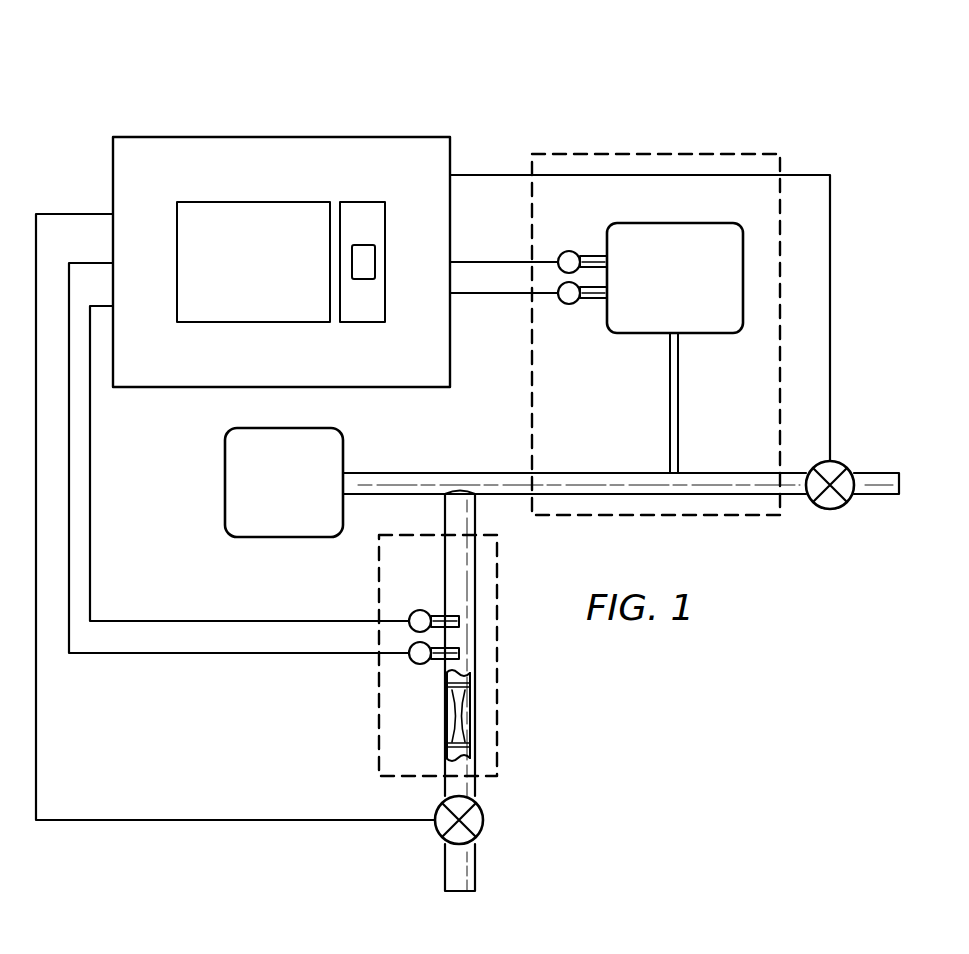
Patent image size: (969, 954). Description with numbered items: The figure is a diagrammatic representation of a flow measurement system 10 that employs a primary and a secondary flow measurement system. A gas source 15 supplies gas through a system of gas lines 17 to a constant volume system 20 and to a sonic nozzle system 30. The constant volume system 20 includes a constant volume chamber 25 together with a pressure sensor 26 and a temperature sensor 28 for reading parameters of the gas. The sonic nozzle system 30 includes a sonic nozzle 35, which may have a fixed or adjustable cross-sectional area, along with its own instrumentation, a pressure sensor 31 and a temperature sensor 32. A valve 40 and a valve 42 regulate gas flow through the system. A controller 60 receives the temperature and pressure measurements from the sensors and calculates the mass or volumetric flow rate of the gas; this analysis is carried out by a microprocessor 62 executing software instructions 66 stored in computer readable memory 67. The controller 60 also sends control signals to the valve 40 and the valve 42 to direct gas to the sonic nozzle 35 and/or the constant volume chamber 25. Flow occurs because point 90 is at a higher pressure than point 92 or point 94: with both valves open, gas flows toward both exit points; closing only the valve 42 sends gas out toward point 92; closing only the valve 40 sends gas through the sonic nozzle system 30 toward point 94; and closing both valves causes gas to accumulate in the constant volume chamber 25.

The flow measurement system 10 is at (345, 60).
The gas source 15 is at (225, 482).
The gas lines 17 is at (455, 464).
The constant volume system 20 is at (657, 151).
The constant volume chamber 25 is at (703, 333).
The pressure sensor 26 is at (573, 248).
The temperature sensor 28 is at (574, 307).
The sonic nozzle system 30 is at (502, 678).
The pressure sensor 31 is at (421, 668).
The temperature sensor 32 is at (421, 606).
The sonic nozzle 35 is at (471, 718).
The valve 40 is at (840, 507).
The valve 42 is at (481, 832).
The controller 60 is at (260, 135).
The microprocessor 62 is at (267, 277).
The software instructions 66 is at (364, 279).
The computer readable memory 67 is at (356, 196).
The point 90 is at (352, 476).
The point 92 is at (876, 472).
The point 94 is at (460, 868).